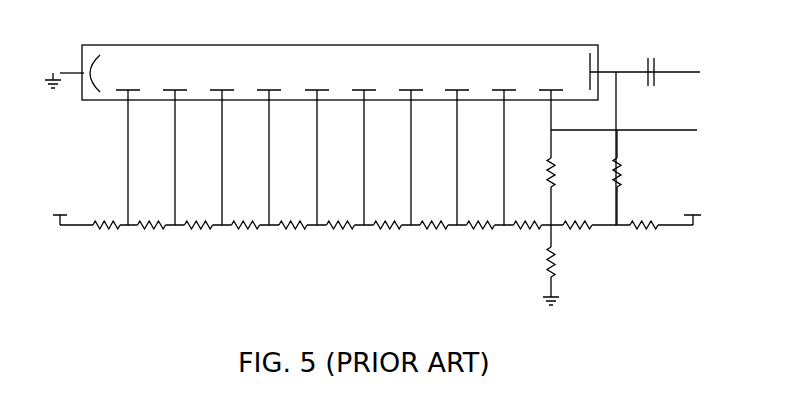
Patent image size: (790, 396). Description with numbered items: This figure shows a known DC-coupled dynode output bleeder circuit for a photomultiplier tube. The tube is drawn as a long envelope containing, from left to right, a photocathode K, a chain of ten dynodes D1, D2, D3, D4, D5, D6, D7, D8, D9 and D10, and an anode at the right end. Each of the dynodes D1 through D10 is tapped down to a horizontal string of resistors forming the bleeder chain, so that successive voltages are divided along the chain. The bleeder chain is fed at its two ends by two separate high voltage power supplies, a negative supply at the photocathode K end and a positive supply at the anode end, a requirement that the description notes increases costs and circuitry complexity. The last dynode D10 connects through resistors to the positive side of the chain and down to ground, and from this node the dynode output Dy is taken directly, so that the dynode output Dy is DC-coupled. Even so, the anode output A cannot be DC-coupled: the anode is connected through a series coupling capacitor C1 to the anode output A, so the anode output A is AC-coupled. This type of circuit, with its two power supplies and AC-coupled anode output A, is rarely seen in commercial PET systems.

The photocathode K is at (72, 73).
The dynode 1 D1 is at (128, 150).
The dynode 2 D2 is at (175, 150).
The dynode 3 D3 is at (222, 150).
The dynode 4 D4 is at (269, 150).
The dynode 5 D5 is at (317, 150).
The dynode 6 D6 is at (364, 150).
The dynode 7 D7 is at (411, 150).
The dynode 8 D8 is at (457, 150).
The dynode 9 D9 is at (504, 150).
The dynode 10 D10 is at (551, 187).
The anode output A is at (640, 71).
The coupling capacitor C1 is at (636, 133).
The dynode output Dy is at (626, 122).